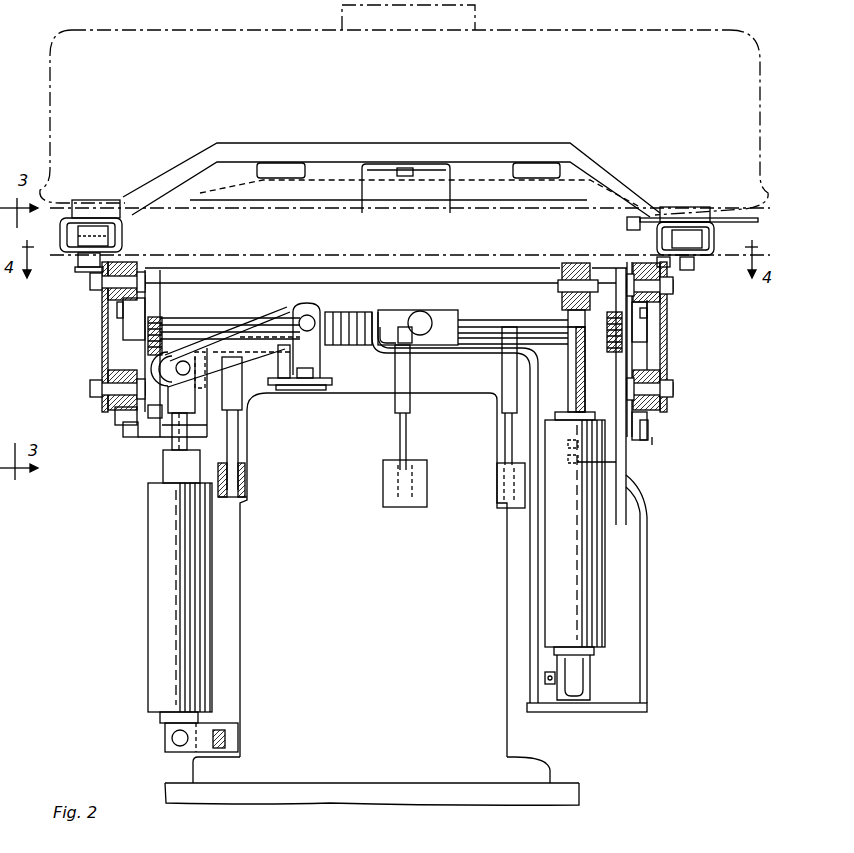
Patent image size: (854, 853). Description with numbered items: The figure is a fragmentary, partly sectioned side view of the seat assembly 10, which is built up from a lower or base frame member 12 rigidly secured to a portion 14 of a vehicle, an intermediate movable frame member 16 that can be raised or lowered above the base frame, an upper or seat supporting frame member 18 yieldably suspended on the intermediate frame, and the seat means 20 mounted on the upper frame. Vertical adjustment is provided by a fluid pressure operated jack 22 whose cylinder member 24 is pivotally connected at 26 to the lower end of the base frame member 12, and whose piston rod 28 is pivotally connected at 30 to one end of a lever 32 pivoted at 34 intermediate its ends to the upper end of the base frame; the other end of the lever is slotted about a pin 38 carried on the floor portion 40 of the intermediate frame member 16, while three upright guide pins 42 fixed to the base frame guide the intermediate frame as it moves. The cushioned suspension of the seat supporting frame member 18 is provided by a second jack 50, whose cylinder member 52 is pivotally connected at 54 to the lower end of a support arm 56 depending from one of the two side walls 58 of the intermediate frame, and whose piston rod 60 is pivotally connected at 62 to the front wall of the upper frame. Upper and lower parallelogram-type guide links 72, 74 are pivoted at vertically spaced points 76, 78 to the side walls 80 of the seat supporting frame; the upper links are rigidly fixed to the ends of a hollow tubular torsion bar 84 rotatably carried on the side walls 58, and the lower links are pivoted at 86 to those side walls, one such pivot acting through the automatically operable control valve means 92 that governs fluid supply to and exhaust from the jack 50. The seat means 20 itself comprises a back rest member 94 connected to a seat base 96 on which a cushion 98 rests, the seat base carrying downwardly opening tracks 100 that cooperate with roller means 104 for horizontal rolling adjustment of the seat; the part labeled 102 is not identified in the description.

The seat assembly 10 is at (167, 589).
The lower or base frame member 12 is at (290, 790).
The portion of a vehicle 14 is at (354, 792).
The intermediate movable frame member 16 is at (465, 372).
The upper or seat supporting frame member 18 is at (670, 336).
The seat means 20 is at (667, 32).
The fluid pressure operated motor means or jack 22 is at (150, 658).
The cylinder member 24 is at (162, 693).
The pivotal connection 26 is at (178, 740).
The piston rod 28 is at (173, 440).
The pivotal connection 30 is at (170, 352).
The lever 32 is at (353, 345).
The pivotal connection 34 is at (312, 318).
The pin 38 is at (418, 321).
The floor portion 40 is at (437, 350).
The upright guide pins 42 is at (237, 447).
The fluid pressure operated motor means or jack 50 is at (607, 587).
The cylinder member 52 is at (586, 630).
The pivotal connection 54 is at (594, 680).
The support arm 56 is at (641, 677).
The side walls 58 is at (143, 362).
The piston rod 60 is at (586, 368).
The pivotal connection 62 is at (578, 278).
The upper guide links 72 is at (145, 304).
The lower guide links 74 is at (125, 415).
The pivotal connection 76 is at (90, 280).
The pivotal connection 78 is at (90, 388).
The side walls 80 is at (102, 330).
The hollow tubular torsion bar 84 is at (462, 278).
The pivotal connection 86 is at (125, 432).
The control valve means 92 is at (622, 450).
The back rest member 94 is at (478, 13).
The seat base 96 is at (403, 163).
The cushion 98 is at (755, 92).
The tracks 100 is at (97, 222).
The channel 102 is at (110, 252).
The roller means 104 is at (112, 233).